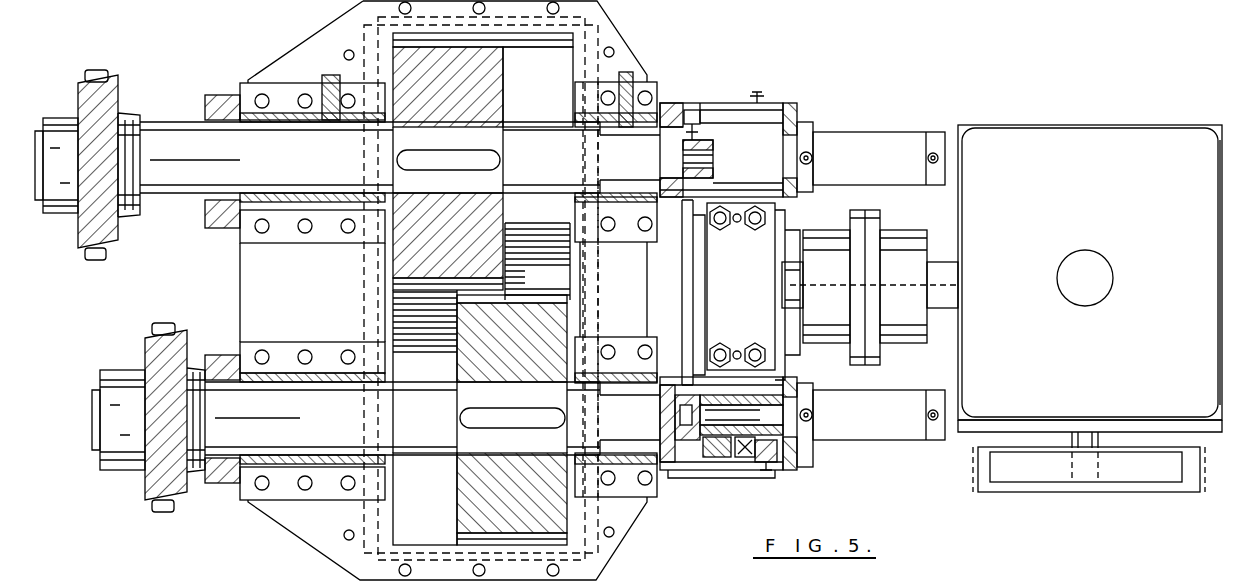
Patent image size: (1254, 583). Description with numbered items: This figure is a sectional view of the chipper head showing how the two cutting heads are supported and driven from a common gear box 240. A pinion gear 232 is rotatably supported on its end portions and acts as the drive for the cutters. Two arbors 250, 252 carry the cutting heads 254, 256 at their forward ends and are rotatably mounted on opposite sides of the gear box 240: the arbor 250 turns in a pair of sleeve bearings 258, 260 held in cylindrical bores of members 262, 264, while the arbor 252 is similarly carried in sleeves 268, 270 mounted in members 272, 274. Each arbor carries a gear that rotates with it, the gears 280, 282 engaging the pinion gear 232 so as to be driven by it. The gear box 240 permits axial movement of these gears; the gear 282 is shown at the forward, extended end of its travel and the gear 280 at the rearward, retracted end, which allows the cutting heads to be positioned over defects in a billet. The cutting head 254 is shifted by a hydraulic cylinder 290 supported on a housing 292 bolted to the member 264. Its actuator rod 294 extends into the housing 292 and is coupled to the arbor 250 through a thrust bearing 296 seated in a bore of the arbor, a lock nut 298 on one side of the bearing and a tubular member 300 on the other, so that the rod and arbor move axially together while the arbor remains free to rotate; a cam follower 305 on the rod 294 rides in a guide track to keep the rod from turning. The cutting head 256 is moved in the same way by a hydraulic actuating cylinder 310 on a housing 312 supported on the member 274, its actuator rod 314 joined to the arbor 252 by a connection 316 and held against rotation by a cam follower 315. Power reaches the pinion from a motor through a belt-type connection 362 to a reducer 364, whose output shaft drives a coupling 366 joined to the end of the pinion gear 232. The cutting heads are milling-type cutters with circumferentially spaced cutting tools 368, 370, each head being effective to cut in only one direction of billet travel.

The pinion gear 232 is at (395, 309).
The gear box 240 is at (612, 290).
The arbor 250 is at (266, 420).
The arbor 252 is at (287, 167).
The cutting head 254 is at (173, 343).
The cutting head 256 is at (115, 98).
The sleeve bearing 258 is at (350, 382).
The sleeve bearing 260 is at (616, 418).
The member 262 is at (320, 350).
The member 264 is at (627, 340).
The sleeve 268 is at (323, 196).
The sleeve 270 is at (653, 198).
The member 272 is at (323, 240).
The member 274 is at (619, 242).
The gear 280 is at (533, 300).
The gear 282 is at (502, 216).
The hydraulic cylinder 290 is at (887, 440).
The housing 292 is at (790, 470).
The actuator rod 294 is at (745, 437).
The thrust bearing 296 is at (722, 440).
The lock nut 298 is at (698, 437).
The tubular member 300 is at (812, 403).
The cam follower 305 is at (762, 445).
The hydraulic actuating cylinder 310 is at (875, 138).
The housing 312 is at (792, 108).
The actuator rod 314 is at (714, 150).
The cam follower 315 is at (700, 111).
The connection 316 is at (690, 188).
The belt-type connection 362 is at (1163, 476).
The reducer 364 is at (1107, 357).
The coupling 366 is at (880, 352).
The cutting tools 368 is at (165, 512).
The cutting tools 370 is at (97, 262).